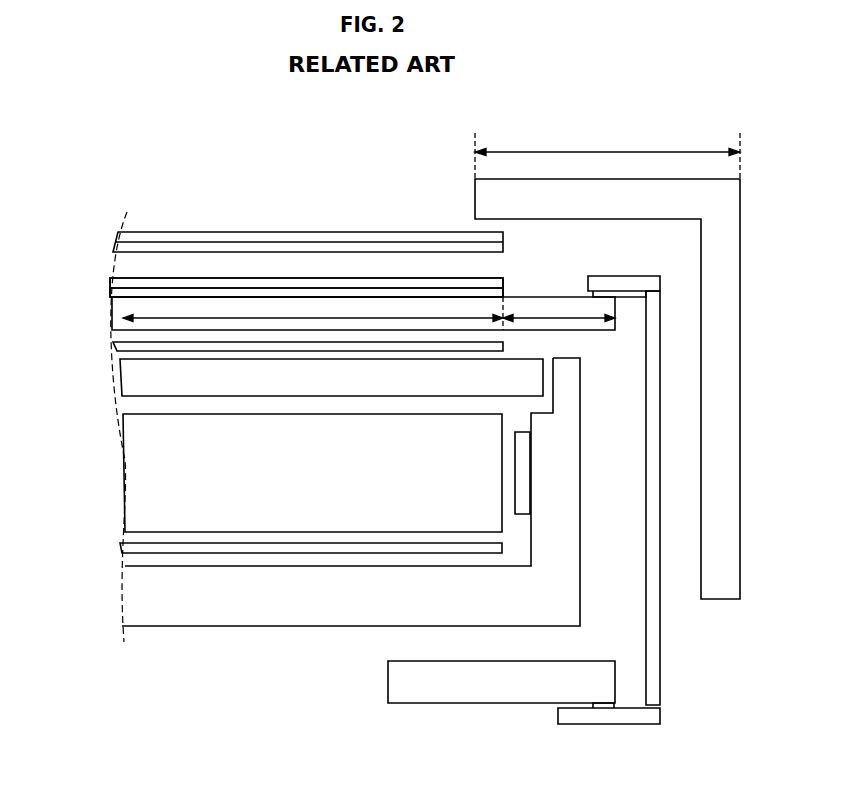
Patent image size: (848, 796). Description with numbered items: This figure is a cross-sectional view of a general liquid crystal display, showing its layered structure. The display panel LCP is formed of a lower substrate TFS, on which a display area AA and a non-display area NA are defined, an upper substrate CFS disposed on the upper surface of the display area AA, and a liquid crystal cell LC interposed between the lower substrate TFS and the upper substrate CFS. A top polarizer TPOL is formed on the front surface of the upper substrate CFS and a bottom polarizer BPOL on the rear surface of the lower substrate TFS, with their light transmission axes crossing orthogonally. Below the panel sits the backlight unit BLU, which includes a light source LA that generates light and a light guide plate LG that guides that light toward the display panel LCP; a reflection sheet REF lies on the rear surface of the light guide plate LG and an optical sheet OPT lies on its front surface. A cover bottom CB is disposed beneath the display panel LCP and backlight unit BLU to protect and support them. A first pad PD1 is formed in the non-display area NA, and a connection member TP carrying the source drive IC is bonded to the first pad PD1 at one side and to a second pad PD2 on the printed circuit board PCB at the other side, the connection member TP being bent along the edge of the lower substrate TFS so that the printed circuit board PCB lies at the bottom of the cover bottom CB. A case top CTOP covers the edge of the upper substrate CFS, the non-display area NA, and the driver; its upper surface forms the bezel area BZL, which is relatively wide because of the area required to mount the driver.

The top polarizer TPOL is at (118, 234).
The display panel LCP is at (48, 267).
The upper substrate CFS is at (110, 272).
The liquid crystal cell LC is at (110, 293).
The lower substrate TFS is at (110, 312).
The display area AA is at (313, 309).
The non-display area NA is at (559, 309).
The bottom polarizer BPOL is at (113, 345).
The backlight unit BLU is at (62, 562).
The optical sheet OPT is at (128, 380).
The light guide plate LG is at (126, 474).
The light source LA is at (532, 470).
The reflection sheet REF is at (121, 547).
The cover bottom CB is at (126, 598).
The case top CTOP is at (722, 458).
The bezel area BZL is at (607, 155).
The first pad PD1 is at (605, 293).
The connection member TP is at (654, 515).
The printed circuit board PCB is at (512, 690).
The second pad PD2 is at (608, 705).